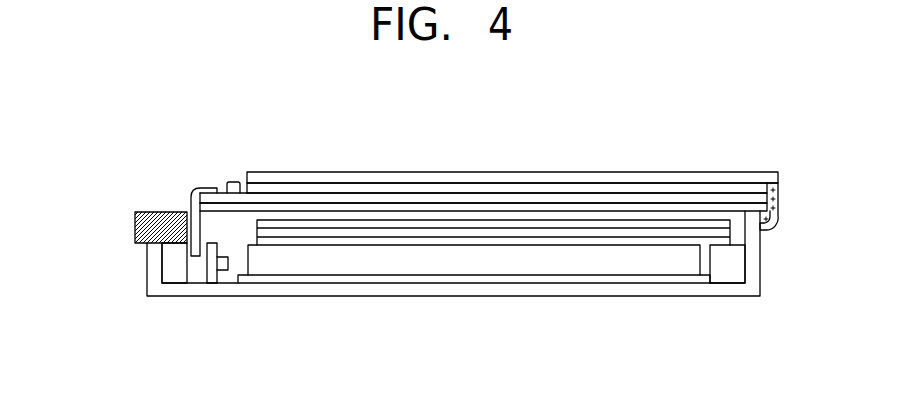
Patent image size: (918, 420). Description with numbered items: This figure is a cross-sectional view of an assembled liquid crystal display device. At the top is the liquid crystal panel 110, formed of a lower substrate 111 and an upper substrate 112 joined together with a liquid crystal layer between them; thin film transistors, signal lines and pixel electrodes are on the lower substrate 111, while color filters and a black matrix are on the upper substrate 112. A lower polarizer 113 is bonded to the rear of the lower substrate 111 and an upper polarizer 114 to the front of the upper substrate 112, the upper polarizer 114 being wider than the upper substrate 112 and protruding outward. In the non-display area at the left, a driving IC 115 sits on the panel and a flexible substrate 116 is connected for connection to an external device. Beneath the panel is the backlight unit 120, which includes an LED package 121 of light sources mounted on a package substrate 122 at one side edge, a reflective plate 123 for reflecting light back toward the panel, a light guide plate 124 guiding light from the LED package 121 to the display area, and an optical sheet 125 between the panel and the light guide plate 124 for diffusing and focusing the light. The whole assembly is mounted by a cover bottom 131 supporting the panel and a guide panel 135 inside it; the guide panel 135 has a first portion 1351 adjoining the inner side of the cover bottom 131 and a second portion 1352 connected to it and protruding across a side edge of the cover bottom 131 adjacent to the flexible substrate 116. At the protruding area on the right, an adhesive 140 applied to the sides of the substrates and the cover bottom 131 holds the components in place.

The liquid crystal panel 110 is at (489, 147).
The lower substrate 111 is at (365, 200).
The upper substrate 112 is at (325, 190).
The lower polarizer 113 is at (267, 122).
The upper polarizer 114 is at (288, 178).
The driving IC 115 is at (236, 182).
The flexible substrate 116 is at (205, 186).
The backlight unit 120 is at (461, 302).
The LED package 121 is at (222, 268).
The package substrate 122 is at (211, 278).
The reflective plate 123 is at (288, 277).
The light guide plate 124 is at (342, 262).
The optical sheet 125 is at (493, 284).
The cover bottom 131 is at (153, 275).
The guide panel 135 is at (436, 245).
The first portion 1351 is at (166, 255).
The second portion 1352 is at (135, 228).
The adhesive 140 is at (780, 210).